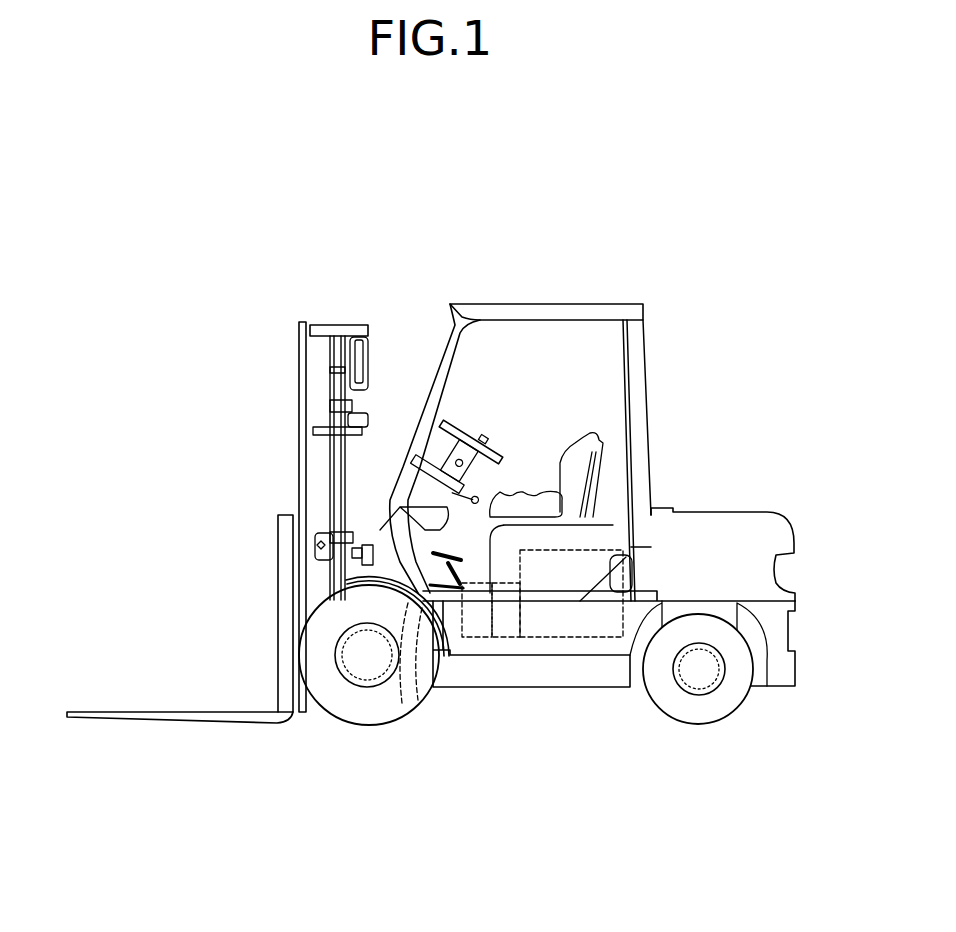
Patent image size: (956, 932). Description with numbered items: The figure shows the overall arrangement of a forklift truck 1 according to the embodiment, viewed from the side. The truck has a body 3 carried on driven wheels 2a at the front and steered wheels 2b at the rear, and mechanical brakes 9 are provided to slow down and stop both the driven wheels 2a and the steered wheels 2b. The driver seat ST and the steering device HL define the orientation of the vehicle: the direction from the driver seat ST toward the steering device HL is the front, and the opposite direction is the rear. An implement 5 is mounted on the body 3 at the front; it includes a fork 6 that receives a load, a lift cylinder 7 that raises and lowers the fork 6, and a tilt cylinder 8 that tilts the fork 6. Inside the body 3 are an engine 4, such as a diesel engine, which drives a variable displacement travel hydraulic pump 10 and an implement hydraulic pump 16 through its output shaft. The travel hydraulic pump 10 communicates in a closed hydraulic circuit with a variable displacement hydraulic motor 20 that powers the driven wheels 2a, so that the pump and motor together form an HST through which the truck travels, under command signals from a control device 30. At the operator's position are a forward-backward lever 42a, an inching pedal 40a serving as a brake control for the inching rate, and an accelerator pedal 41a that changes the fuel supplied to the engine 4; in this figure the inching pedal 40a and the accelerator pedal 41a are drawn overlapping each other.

The forklift truck 1 is at (636, 196).
The driven wheels 2a is at (365, 710).
The steered wheels 2b is at (700, 707).
The body 3 is at (518, 678).
The engine 4 is at (577, 637).
The implement 5 is at (386, 235).
The fork 6 is at (118, 710).
The lift cylinder 7 is at (337, 458).
The tilt cylinder 8 is at (358, 545).
The mechanical brakes 9 is at (366, 672).
The travel hydraulic pump 10 is at (465, 650).
The implement hydraulic pump 16 is at (500, 637).
The hydraulic motor 20 is at (422, 660).
The control device 30 is at (406, 695).
The inching pedal 40a is at (460, 552).
The accelerator pedal 41a is at (446, 586).
The forward-backward lever 42a is at (478, 470).
The steering device HL is at (455, 413).
The driver seat ST is at (583, 453).